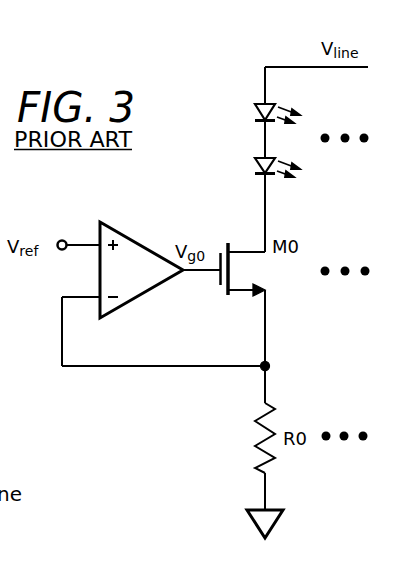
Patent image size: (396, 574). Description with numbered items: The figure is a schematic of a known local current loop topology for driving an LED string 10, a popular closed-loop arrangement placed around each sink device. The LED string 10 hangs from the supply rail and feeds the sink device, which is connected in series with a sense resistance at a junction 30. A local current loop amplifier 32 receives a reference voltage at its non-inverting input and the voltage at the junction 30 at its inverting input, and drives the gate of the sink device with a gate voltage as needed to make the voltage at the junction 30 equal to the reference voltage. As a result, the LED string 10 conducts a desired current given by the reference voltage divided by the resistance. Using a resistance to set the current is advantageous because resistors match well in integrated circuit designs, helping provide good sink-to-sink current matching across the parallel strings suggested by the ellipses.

The LED string 10 is at (240, 139).
The local current loop amplifier 32 is at (135, 298).
The junction 30 is at (268, 365).